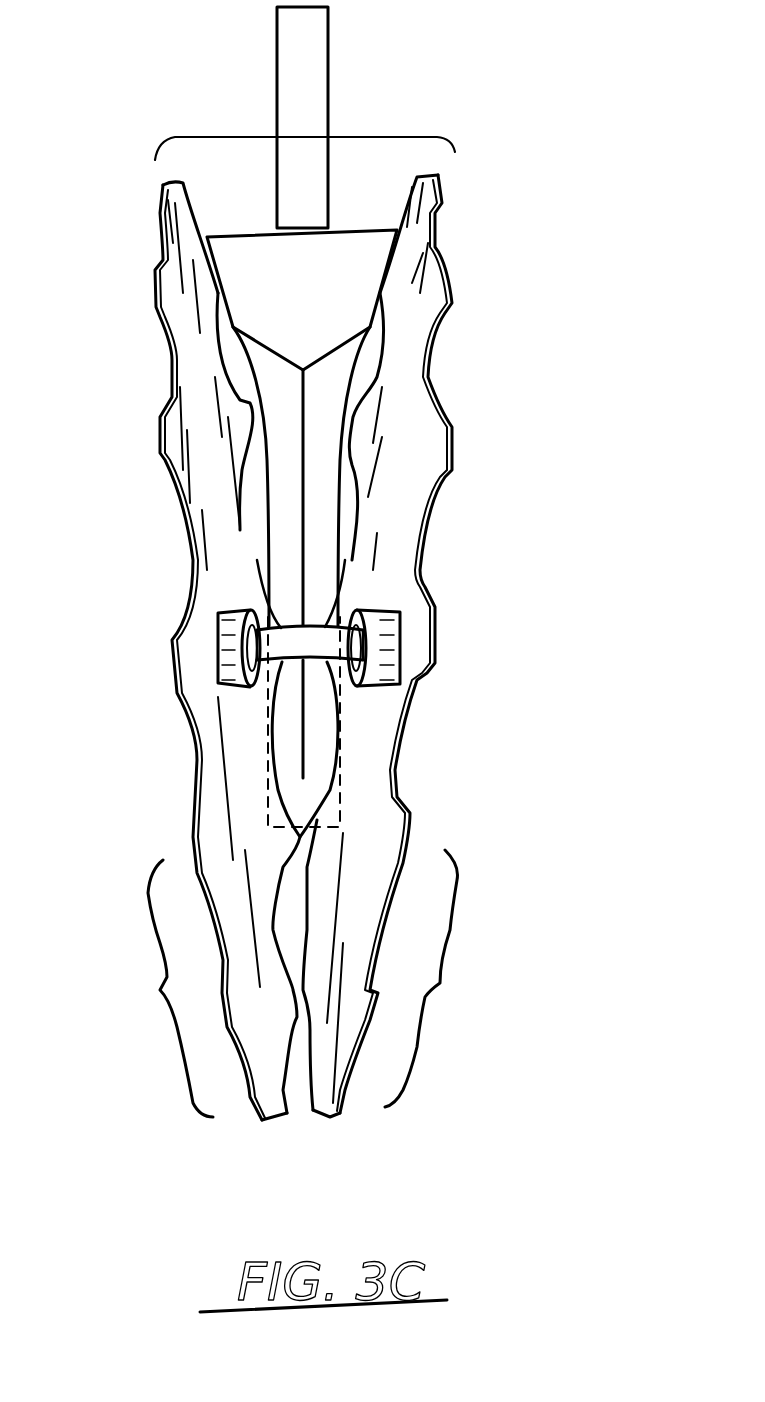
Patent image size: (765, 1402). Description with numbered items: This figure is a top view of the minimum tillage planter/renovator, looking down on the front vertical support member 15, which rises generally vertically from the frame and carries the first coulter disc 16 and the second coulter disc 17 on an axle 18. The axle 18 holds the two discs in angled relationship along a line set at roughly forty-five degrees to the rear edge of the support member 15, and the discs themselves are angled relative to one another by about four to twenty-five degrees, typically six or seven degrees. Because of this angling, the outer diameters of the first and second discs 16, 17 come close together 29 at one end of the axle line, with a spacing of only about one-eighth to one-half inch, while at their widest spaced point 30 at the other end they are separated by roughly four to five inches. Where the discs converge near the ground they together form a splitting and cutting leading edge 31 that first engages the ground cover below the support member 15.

The widest spaced point 30 is at (300, 129).
The front vertical support member 15 is at (343, 737).
The first coulter disc 16 is at (197, 780).
The second coulter disc 17 is at (410, 787).
The axle 18 is at (327, 623).
The close together spacing 29 is at (160, 990).
The leading edge 31 is at (440, 983).